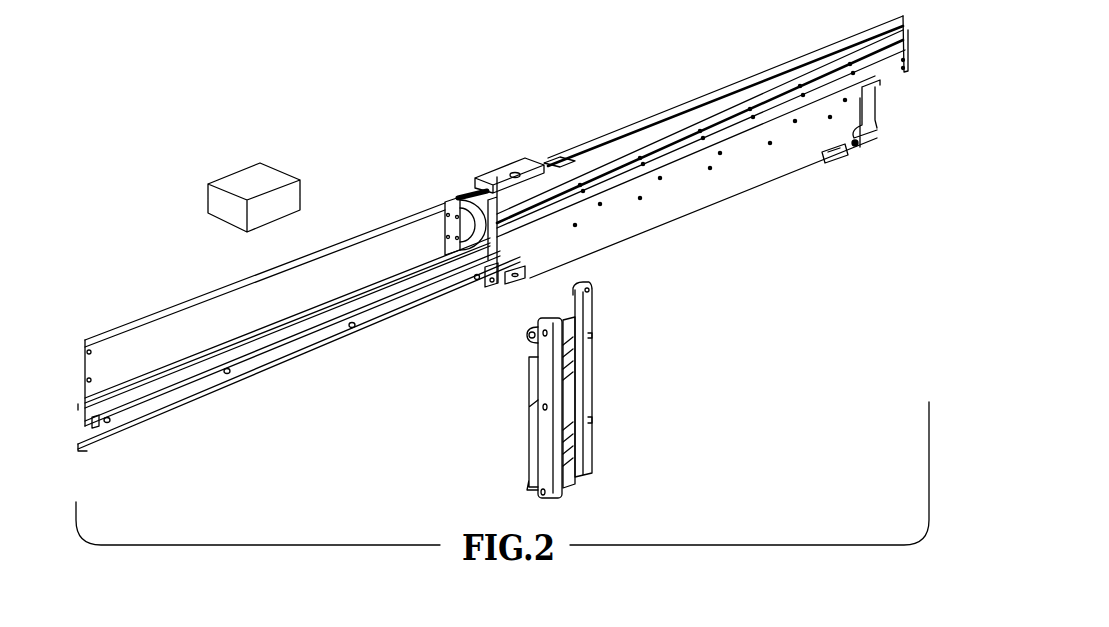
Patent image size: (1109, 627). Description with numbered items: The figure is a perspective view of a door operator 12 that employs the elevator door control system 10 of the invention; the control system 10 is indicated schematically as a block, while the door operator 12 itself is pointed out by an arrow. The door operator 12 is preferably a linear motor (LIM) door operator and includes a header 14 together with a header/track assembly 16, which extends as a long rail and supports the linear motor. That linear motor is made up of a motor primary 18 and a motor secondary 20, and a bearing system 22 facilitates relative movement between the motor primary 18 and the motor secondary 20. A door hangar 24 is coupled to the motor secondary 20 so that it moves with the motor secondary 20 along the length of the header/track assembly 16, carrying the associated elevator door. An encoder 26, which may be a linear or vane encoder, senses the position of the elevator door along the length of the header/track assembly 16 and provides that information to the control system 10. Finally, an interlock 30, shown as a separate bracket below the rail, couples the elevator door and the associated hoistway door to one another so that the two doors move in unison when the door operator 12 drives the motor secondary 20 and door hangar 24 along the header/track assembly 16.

The elevator door control system 10 is at (245, 182).
The door operator 12 is at (290, 80).
The header 14 is at (553, 152).
The header/track assembly 16 is at (295, 362).
The motor primary 18 is at (467, 192).
The motor secondary 20 is at (885, 85).
The bearing system 22 is at (503, 170).
The door hangar 24 is at (722, 200).
The encoder 26 is at (467, 253).
The interlock 30 is at (592, 373).